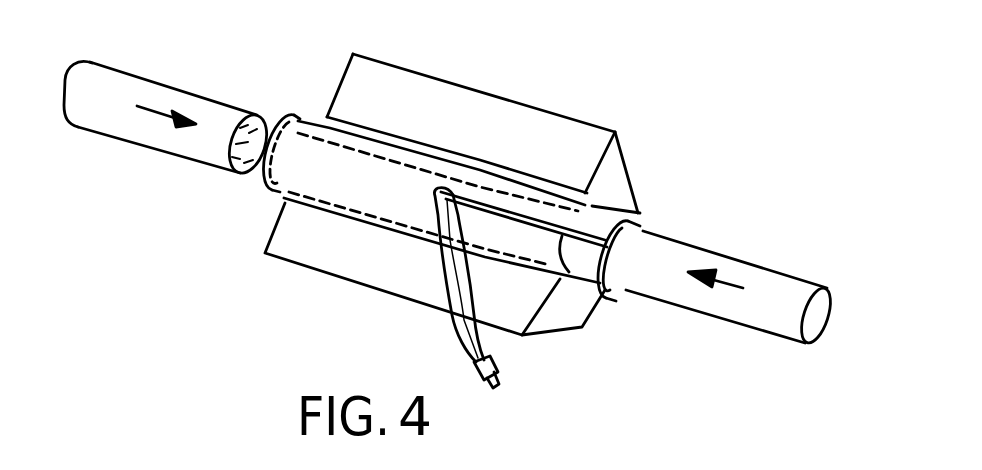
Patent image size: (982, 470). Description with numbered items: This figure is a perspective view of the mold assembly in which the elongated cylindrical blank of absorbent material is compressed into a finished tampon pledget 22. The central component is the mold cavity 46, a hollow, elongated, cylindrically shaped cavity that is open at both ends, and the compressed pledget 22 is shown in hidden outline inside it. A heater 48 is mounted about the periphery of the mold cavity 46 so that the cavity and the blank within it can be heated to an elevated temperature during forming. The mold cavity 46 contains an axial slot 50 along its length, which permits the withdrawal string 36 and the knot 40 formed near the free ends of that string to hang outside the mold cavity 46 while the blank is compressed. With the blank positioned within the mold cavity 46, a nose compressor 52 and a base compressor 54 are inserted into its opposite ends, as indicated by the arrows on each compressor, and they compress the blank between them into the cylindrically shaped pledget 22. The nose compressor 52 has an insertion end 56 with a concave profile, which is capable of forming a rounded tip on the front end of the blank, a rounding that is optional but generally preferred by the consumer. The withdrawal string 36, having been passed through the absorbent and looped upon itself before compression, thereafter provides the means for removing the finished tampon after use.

The pledget 22 is at (310, 113).
The withdrawal string 36 is at (447, 276).
The knot 40 is at (502, 366).
The mold cavity 46 is at (604, 202).
The heater 48 is at (499, 114).
The axial slot 50 is at (563, 242).
The nose compressor 52 is at (150, 87).
The base compressor 54 is at (748, 268).
The insertion end 56 is at (268, 120).